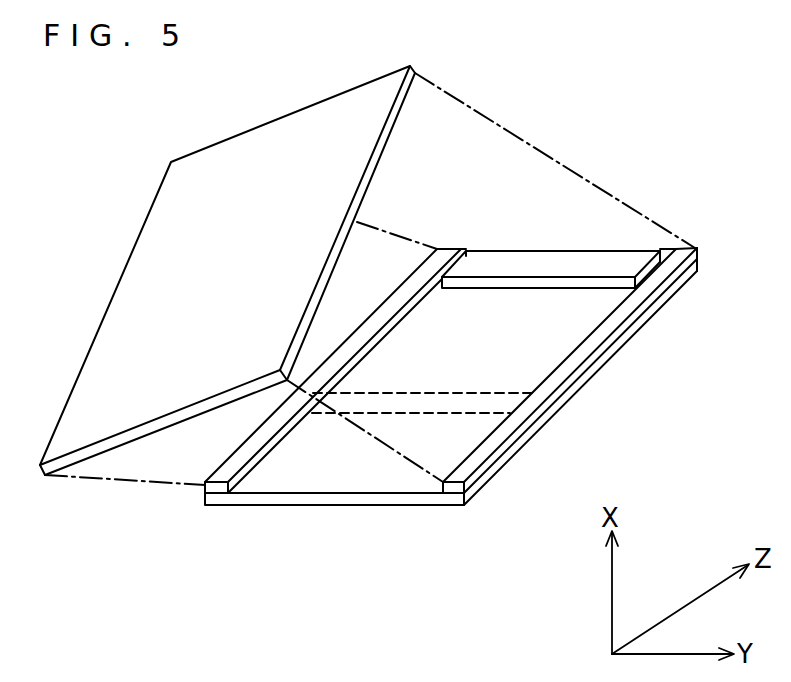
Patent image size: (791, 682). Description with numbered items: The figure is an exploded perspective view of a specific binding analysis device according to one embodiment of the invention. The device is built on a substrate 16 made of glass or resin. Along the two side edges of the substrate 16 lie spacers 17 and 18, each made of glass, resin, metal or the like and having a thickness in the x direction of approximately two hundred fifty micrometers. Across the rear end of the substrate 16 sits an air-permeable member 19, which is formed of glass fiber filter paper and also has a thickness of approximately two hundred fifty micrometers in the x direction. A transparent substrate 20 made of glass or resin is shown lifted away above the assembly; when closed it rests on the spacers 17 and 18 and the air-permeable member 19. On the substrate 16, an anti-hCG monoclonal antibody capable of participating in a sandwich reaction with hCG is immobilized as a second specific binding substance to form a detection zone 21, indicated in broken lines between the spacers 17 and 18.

The substrate 16 is at (335, 494).
The spacer 17 is at (477, 466).
The spacer 18 is at (205, 491).
The air-permeable member 19 is at (612, 265).
The transparent substrate 20 is at (288, 133).
The detection zone 21 is at (441, 398).